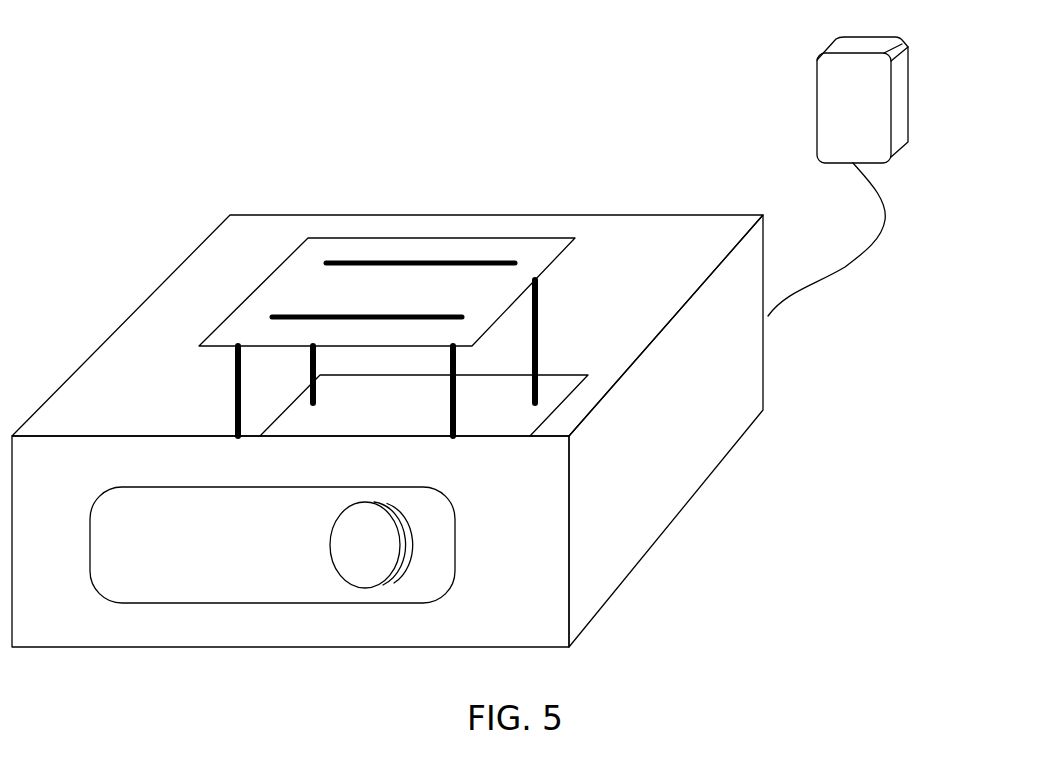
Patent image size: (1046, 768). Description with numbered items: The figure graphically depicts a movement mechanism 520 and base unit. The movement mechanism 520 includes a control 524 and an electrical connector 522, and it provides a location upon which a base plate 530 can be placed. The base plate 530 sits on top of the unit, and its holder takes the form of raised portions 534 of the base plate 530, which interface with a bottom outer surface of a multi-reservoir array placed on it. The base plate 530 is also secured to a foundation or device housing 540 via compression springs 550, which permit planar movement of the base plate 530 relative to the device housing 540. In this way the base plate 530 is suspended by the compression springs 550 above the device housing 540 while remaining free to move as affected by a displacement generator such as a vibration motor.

The movement mechanism 520 is at (467, 342).
The electrical connector 522 is at (850, 265).
The control 524 is at (619, 312).
The base plate 530 is at (387, 292).
The raised portions 534 is at (295, 315).
The device housing 540 is at (683, 472).
The compression springs 550 is at (235, 400).